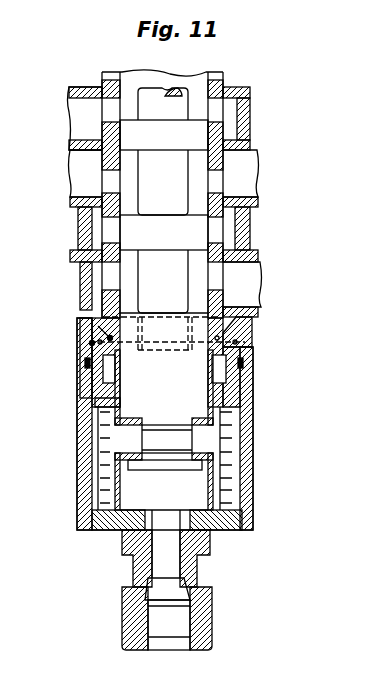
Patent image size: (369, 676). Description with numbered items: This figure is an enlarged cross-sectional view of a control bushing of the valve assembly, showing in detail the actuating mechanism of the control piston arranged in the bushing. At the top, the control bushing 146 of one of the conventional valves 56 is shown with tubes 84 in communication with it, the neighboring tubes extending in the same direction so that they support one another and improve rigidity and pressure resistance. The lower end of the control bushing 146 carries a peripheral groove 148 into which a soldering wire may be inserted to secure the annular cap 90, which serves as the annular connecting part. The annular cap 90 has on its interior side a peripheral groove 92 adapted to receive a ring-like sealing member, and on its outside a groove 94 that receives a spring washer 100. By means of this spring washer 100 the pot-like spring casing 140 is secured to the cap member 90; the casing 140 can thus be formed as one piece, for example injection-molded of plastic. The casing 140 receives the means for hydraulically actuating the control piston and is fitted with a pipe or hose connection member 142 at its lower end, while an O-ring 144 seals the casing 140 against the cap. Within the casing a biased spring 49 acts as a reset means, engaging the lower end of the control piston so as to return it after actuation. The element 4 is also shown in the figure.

The control bushing 146 is at (224, 90).
The valve 56 is at (160, 127).
The tube 84 is at (258, 137).
The peripheral groove 148 is at (108, 336).
The valve body 4 is at (237, 328).
The groove 94 is at (90, 342).
The spring washer 100 is at (207, 341).
The peripheral groove 92 is at (86, 363).
The O-ring 144 is at (243, 363).
The annular cap 90 is at (86, 385).
The pot-like spring casing 140 is at (247, 413).
The biased spring 49 is at (220, 478).
The pipe or hose connection member 142 is at (172, 548).